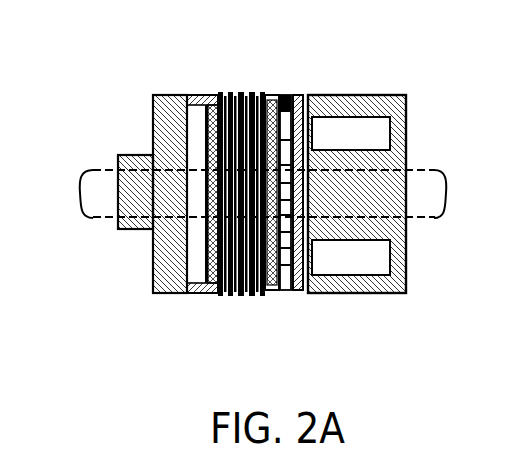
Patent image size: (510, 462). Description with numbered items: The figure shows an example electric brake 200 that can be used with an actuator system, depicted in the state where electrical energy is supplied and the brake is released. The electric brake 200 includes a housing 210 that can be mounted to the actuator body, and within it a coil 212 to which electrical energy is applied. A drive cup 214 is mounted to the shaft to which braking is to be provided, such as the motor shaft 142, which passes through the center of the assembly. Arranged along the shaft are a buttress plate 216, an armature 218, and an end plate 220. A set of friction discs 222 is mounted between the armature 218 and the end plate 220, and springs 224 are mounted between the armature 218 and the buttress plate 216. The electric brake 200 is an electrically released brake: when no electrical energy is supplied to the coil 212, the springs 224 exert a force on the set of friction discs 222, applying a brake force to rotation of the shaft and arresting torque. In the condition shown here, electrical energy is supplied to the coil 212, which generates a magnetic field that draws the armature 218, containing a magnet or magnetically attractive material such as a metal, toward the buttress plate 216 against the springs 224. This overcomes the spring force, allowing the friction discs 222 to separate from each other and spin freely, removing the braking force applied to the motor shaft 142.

The electric brake 200 is at (80, 95).
The motor shaft 142 is at (92, 168).
The housing 210 is at (352, 200).
The coil 212 is at (372, 128).
The drive cup 214 is at (170, 280).
The buttress plate 216 is at (297, 296).
The armature 218 is at (290, 179).
The end plate 220 is at (212, 121).
The set of friction discs 222 is at (262, 296).
The springs 224 is at (284, 128).